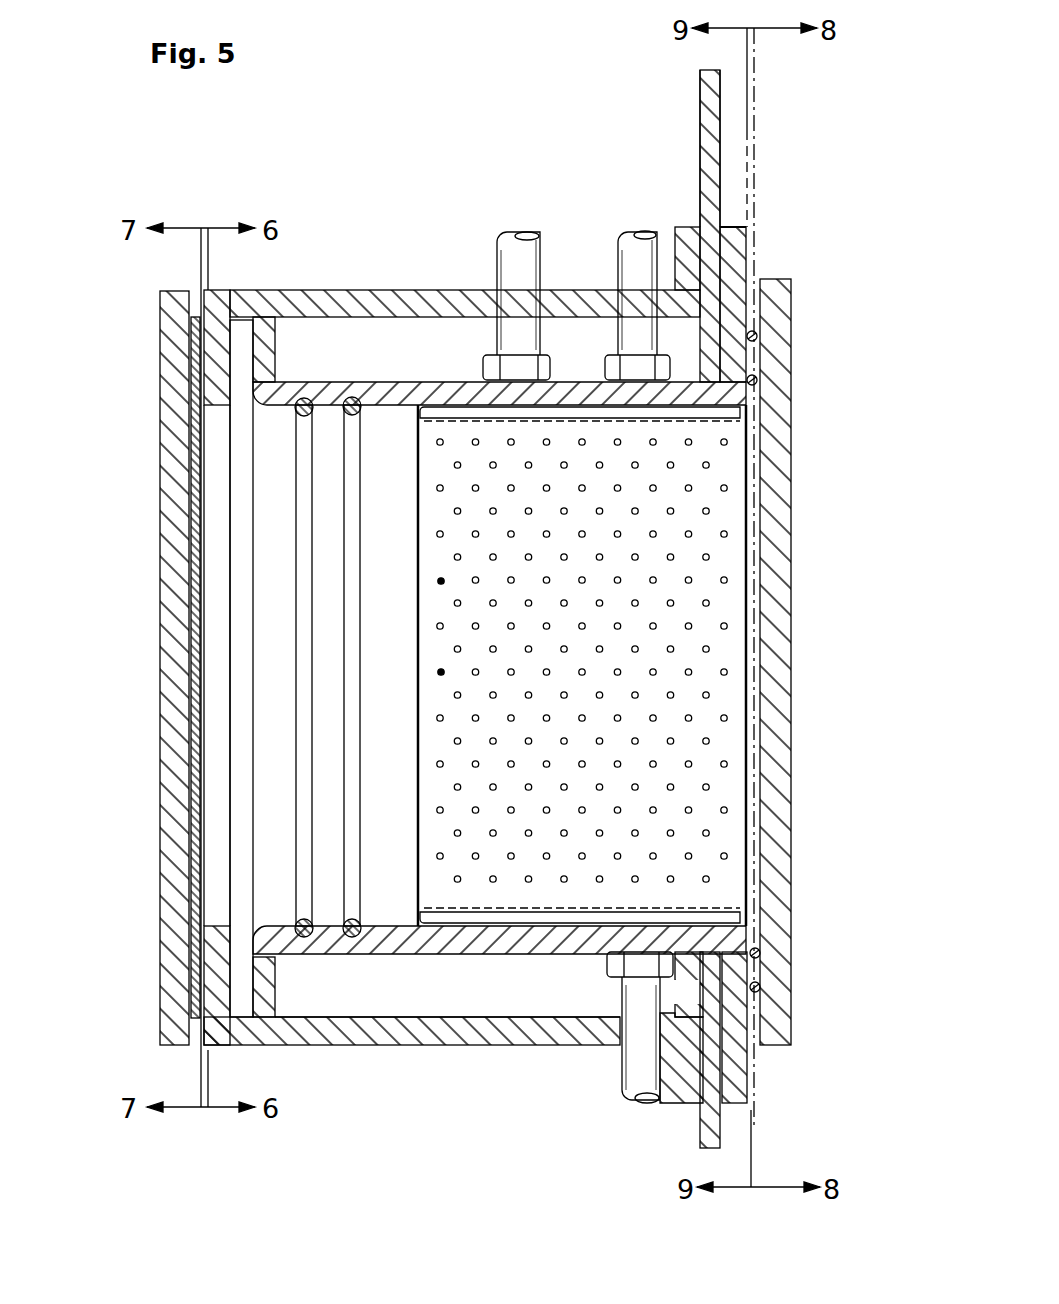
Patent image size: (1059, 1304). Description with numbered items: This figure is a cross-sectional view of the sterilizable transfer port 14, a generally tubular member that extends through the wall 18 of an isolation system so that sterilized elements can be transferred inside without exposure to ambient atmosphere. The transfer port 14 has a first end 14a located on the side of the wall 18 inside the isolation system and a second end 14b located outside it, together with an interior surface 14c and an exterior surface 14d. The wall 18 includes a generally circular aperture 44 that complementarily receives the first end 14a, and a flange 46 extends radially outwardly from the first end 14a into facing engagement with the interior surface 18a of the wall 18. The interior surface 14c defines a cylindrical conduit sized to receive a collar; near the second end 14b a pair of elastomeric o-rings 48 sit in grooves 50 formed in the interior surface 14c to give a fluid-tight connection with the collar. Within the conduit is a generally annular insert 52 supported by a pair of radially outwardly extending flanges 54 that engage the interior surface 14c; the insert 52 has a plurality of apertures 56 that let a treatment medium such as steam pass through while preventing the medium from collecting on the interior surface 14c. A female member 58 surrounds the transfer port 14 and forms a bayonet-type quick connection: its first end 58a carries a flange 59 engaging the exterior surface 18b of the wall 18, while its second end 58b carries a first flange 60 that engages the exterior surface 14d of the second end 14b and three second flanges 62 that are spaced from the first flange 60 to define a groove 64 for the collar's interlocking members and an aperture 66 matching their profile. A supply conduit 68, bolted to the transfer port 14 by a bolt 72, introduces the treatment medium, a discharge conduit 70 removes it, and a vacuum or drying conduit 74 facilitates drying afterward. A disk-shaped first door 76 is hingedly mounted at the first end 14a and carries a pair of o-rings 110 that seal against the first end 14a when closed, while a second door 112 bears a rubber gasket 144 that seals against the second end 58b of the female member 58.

The transfer port 14 is at (438, 228).
The first end 14a is at (733, 262).
The second end 14b is at (273, 390).
The interior surface 14c is at (415, 814).
The exterior surface 14d is at (407, 382).
The wall 18 is at (700, 123).
The interior surface 18a is at (721, 153).
The exterior surface 18b is at (699, 183).
The aperture 44 is at (683, 984).
The flange 46 is at (738, 230).
The o-rings 48 is at (290, 482).
The grooves 50 is at (293, 412).
The insert 52 is at (590, 664).
The flanges 54 is at (418, 421).
The apertures 56 is at (441, 582).
The female member 58 is at (367, 300).
The first end 58a is at (675, 1040).
The second end 58b is at (223, 305).
The flange 59 is at (687, 227).
The first flange 60 is at (276, 335).
The second flanges 62 is at (212, 400).
The groove 64 is at (245, 333).
The aperture 66 is at (215, 822).
The supply conduit 68 is at (530, 247).
The discharge conduit 70 is at (628, 1080).
The bolt 72 is at (490, 365).
The drying conduit 74 is at (620, 264).
The first door 76 is at (782, 593).
The o-rings 110 is at (757, 338).
The second door 112 is at (160, 638).
The rubber gasket 144 is at (192, 728).